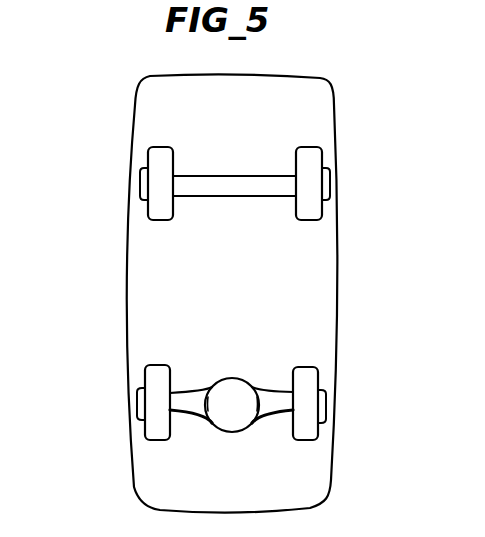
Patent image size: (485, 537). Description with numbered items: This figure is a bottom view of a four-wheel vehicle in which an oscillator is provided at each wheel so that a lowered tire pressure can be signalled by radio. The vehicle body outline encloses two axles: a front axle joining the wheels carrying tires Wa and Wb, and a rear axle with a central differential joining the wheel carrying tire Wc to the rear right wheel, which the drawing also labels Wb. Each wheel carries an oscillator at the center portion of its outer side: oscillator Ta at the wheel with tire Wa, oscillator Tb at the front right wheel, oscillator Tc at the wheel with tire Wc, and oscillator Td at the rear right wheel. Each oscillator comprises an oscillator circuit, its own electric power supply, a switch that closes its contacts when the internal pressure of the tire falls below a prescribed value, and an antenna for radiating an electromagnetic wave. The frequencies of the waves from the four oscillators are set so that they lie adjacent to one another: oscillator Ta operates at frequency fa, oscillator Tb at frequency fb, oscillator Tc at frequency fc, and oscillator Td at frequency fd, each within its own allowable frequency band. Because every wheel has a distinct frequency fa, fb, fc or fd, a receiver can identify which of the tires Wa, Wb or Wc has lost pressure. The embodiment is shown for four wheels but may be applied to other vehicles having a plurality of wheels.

The tire Wa is at (165, 217).
The tire Wb is at (300, 215).
The tire Wc is at (165, 368).
The oscillator Ta is at (104, 164).
The oscillator Tb is at (356, 182).
The oscillator Tc is at (100, 384).
The oscillator Td is at (353, 416).
The oscillator frequency fa is at (140, 168).
The oscillator frequency fb is at (357, 168).
The oscillator frequency fc is at (139, 390).
The oscillator frequency fd is at (326, 394).